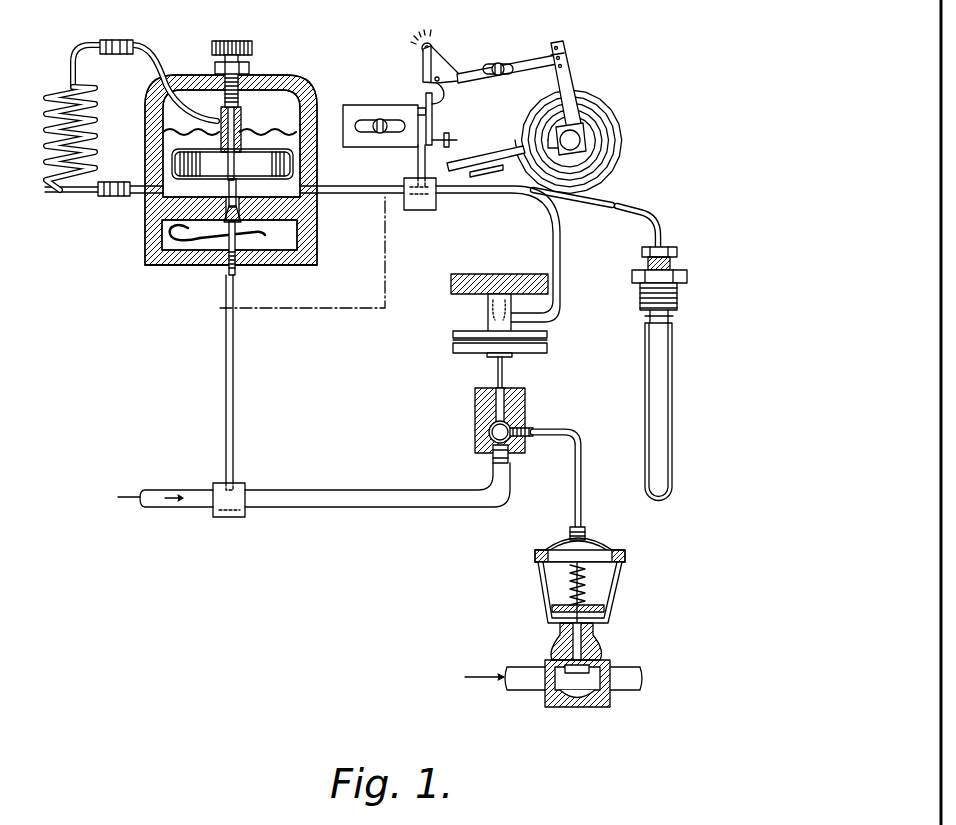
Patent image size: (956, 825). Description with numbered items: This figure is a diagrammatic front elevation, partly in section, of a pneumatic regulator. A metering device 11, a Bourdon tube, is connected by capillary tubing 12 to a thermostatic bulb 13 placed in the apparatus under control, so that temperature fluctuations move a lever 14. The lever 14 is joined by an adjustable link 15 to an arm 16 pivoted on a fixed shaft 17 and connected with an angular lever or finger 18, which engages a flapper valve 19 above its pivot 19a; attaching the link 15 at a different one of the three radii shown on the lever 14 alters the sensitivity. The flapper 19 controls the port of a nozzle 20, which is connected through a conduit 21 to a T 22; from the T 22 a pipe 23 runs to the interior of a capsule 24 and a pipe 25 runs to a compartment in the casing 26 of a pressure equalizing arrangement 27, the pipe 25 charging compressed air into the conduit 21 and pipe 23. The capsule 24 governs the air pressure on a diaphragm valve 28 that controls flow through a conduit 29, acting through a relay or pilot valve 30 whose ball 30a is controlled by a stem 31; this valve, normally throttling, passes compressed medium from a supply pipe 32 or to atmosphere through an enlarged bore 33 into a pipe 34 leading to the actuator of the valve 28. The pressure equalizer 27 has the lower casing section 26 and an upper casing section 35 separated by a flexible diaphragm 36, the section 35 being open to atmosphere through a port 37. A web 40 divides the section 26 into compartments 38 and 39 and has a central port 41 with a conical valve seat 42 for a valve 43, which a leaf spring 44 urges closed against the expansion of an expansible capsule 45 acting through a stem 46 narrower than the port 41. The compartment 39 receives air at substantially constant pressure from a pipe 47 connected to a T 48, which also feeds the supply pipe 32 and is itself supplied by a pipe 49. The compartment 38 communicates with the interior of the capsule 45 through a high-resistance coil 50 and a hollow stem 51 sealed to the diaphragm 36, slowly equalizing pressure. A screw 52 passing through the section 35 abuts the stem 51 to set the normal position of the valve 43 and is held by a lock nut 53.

The metering device 11 is at (624, 128).
The capillary tubing 12 is at (645, 212).
The thermostatic bulb 13 is at (673, 416).
The lever 14 is at (575, 82).
The adjustable link 15 is at (503, 64).
The arm 16 is at (420, 66).
The fixed shaft 17 is at (431, 42).
The angular lever or finger 18 is at (444, 66).
The flapper valve 19 is at (434, 124).
The pivot 19a is at (420, 106).
The nozzle 20 is at (418, 128).
The conduit 21 is at (418, 168).
The T 22 is at (420, 210).
The pipe 23 is at (548, 246).
The capsule 24 is at (548, 352).
The pipe 25 is at (365, 196).
The casing 26 is at (318, 186).
The pressure equalizing arrangement 27 is at (352, 318).
The diaphragm valve 28 is at (620, 612).
The conduit 29 is at (622, 668).
The relay or pilot valve 30 is at (475, 432).
The ball 30a is at (495, 458).
The stem 31 is at (497, 368).
The supply pipe 32 is at (344, 490).
The enlarged bore 33 is at (510, 392).
The pipe 34 is at (581, 492).
The upper casing section 35 is at (318, 96).
The flexible diaphragm 36 is at (300, 136).
The port 37 is at (168, 82).
The compartment 38 is at (160, 196).
The compartment 39 is at (300, 252).
The web 40 is at (295, 232).
The central port 41 is at (239, 192).
The conical valve seat 42 is at (225, 236).
The valve 43 is at (228, 262).
The leaf spring 44 is at (178, 240).
The expansible capsule 45 is at (172, 160).
The stem 46 is at (226, 192).
The pipe 47 is at (234, 398).
The T 48 is at (238, 517).
The pipe 49 is at (180, 490).
The coil 50 is at (52, 92).
The hollow stem 51 is at (241, 114).
The screw 52 is at (232, 40).
The lock nut 53 is at (252, 68).